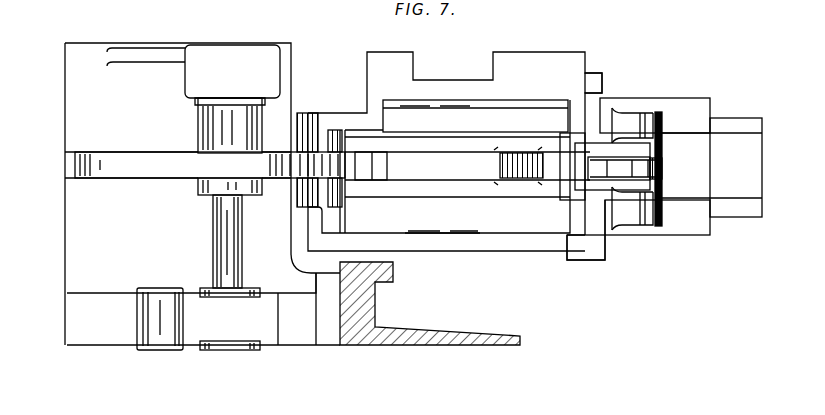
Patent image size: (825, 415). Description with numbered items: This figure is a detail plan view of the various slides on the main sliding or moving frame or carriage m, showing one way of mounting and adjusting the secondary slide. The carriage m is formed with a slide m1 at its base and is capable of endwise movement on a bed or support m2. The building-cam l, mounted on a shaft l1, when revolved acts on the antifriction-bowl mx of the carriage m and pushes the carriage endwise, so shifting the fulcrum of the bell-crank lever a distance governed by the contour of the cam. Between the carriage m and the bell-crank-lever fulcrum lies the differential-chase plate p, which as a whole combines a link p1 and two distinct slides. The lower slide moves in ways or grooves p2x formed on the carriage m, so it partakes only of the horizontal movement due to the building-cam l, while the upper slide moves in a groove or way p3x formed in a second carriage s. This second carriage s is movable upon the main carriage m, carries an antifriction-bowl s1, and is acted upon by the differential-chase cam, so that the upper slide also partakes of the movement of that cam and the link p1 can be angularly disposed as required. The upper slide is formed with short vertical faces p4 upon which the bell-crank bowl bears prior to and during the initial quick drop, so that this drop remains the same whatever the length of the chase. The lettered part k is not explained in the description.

The building-cam l is at (168, 125).
The building-cam shaft l1 is at (230, 248).
The antifriction-bowl mx is at (327, 155).
The sliding or movable frame or carriage m is at (366, 118).
The second carriage s is at (467, 160).
The antifriction-bowl of second carriage s1 is at (517, 170).
The groove or way p3x is at (555, 193).
The ways or grooves p2x is at (595, 88).
The slide m1 is at (696, 111).
The bed or support m2 is at (731, 124).
The short vertical faces p4 is at (657, 155).
The differential-chase plate p is at (703, 165).
The link p1 is at (672, 175).
The part k is at (718, 10).